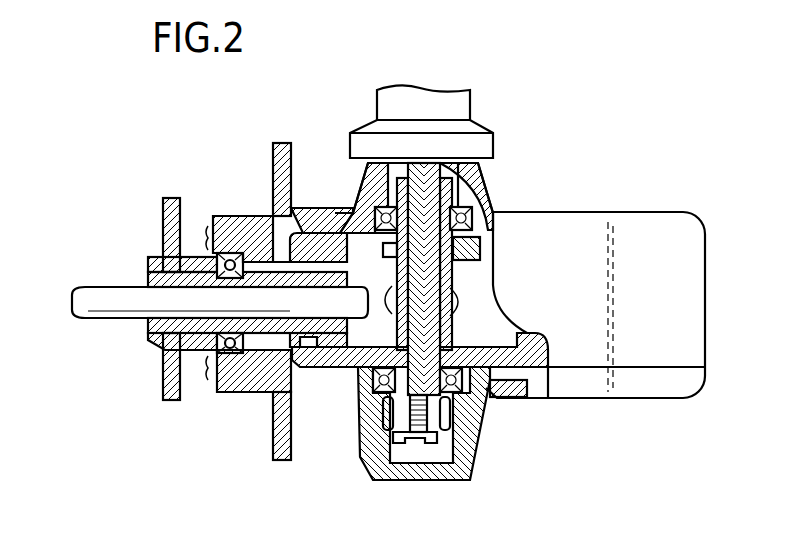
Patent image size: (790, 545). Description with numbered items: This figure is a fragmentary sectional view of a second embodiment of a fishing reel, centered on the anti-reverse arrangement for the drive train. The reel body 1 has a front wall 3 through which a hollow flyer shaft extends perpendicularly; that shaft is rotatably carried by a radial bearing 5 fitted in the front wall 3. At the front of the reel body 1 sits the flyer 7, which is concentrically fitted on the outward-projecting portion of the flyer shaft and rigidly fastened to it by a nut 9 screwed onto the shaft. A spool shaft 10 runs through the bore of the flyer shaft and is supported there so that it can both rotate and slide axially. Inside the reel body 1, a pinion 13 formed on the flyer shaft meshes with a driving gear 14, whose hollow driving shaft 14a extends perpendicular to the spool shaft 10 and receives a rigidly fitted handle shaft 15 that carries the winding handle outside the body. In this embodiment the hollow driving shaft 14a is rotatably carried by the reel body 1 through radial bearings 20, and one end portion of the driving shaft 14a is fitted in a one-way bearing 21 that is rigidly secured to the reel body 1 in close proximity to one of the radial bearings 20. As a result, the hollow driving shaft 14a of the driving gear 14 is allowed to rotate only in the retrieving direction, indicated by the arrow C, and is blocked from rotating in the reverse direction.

The reel body 1 is at (577, 212).
The front wall 3 is at (303, 216).
The radial bearing 5 is at (231, 253).
The flyer 7 is at (168, 227).
The nut 9 is at (145, 343).
The spool shaft 10 is at (93, 320).
The pinion 13 is at (318, 268).
The driving gear 14 is at (527, 333).
The hollow driving shaft 14a is at (447, 278).
The handle shaft 15 is at (427, 180).
The radial bearings 20 is at (492, 195).
The one-way bearing 21 is at (478, 432).
The arrow C is at (432, 311).